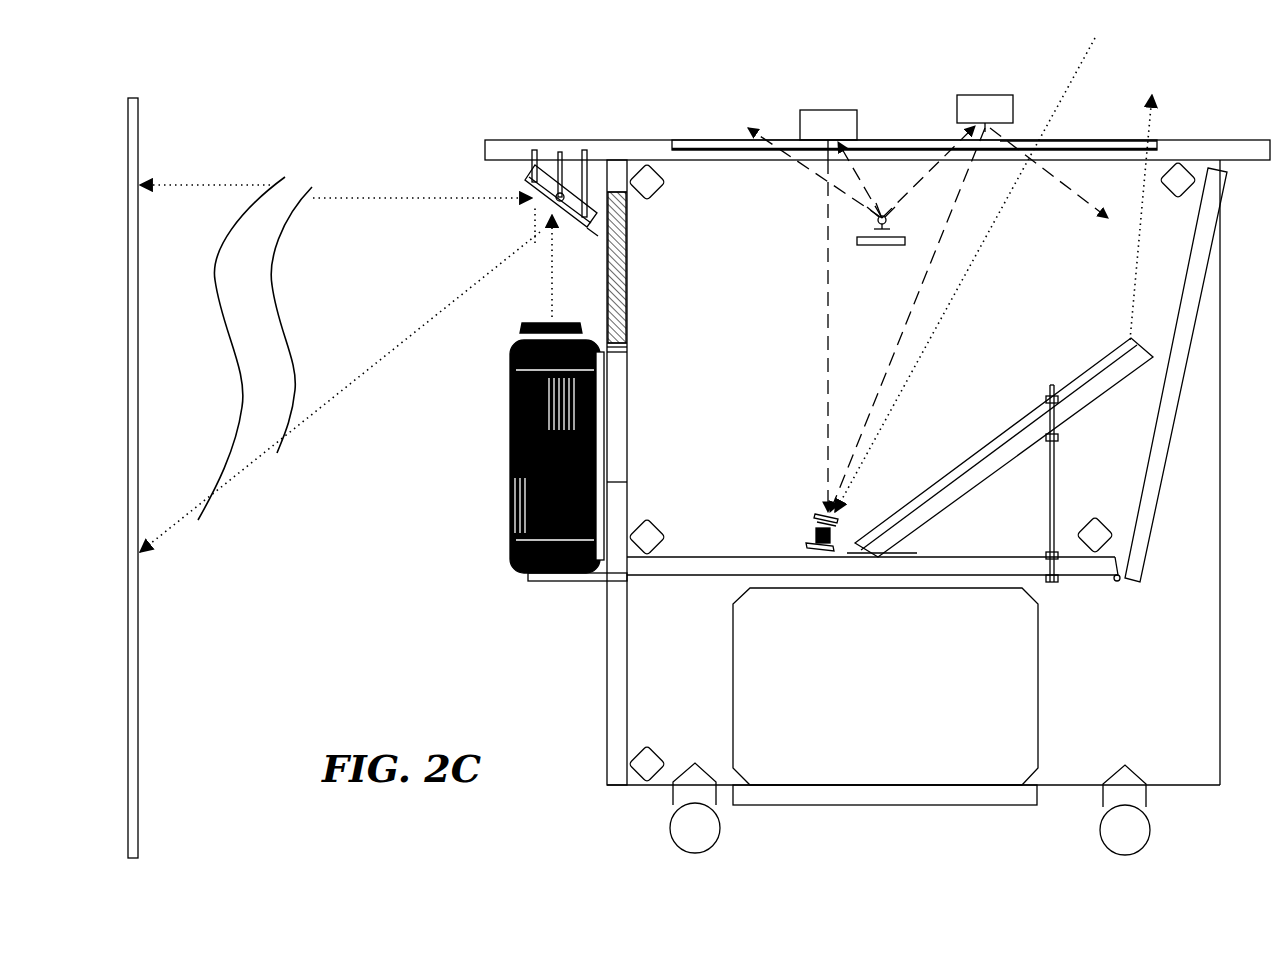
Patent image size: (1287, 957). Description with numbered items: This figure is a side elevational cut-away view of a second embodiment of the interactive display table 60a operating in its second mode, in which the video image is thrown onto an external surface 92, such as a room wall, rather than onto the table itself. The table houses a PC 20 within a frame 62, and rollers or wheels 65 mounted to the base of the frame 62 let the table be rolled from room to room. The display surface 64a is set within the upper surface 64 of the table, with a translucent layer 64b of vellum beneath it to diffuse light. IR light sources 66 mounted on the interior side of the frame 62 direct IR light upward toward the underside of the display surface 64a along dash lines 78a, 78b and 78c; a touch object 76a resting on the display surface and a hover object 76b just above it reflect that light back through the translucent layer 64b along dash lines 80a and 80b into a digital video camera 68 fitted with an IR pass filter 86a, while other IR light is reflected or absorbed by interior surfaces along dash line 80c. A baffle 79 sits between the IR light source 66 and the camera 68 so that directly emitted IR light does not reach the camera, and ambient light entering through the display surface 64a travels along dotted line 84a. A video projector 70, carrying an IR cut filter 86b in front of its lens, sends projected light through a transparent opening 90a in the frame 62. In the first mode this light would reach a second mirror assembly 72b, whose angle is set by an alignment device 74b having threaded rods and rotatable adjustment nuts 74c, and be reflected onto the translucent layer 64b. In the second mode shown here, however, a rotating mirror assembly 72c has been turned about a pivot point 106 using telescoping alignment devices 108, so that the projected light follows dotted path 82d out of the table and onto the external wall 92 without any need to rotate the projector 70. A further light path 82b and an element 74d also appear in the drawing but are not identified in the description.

The PC 20 is at (1038, 690).
The display table 60a is at (505, 612).
The frame 62 is at (607, 680).
The upper surface 64 is at (635, 140).
The display surface 64a is at (726, 139).
The translucent layer 64b is at (1072, 148).
The wheels 65 is at (670, 832).
The IR light sources 66 is at (878, 221).
The digital video camera 68 is at (815, 535).
The video projector 70 is at (510, 400).
The second mirror assembly 72b is at (970, 455).
The rotating mirror assembly 72c is at (588, 230).
The alignment device 74b is at (1055, 460).
The rotatable adjustment nuts 74c is at (1045, 400).
The bracket 74d is at (627, 256).
The touch object 76a is at (815, 110).
The hover object 76b is at (970, 95).
The dash line 78a is at (800, 165).
The dash line 78b is at (858, 172).
The dash line 78c is at (940, 165).
The baffle 79 is at (880, 246).
The dash line 80a is at (823, 297).
The dash line 80b is at (893, 325).
The dash line 80c is at (1070, 200).
The light path 82b is at (1125, 290).
The dotted path 82d is at (365, 192).
The dotted line 84a is at (1086, 55).
The IR pass filter 86a is at (823, 517).
The IR cut filter 86b is at (520, 324).
The transparent opening 90a is at (627, 300).
The external surface 92 is at (138, 100).
The pivot point 106 is at (538, 187).
The alignment devices 108 is at (535, 162).